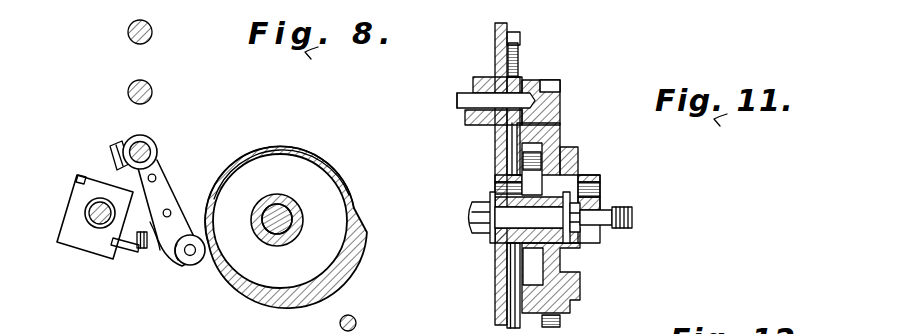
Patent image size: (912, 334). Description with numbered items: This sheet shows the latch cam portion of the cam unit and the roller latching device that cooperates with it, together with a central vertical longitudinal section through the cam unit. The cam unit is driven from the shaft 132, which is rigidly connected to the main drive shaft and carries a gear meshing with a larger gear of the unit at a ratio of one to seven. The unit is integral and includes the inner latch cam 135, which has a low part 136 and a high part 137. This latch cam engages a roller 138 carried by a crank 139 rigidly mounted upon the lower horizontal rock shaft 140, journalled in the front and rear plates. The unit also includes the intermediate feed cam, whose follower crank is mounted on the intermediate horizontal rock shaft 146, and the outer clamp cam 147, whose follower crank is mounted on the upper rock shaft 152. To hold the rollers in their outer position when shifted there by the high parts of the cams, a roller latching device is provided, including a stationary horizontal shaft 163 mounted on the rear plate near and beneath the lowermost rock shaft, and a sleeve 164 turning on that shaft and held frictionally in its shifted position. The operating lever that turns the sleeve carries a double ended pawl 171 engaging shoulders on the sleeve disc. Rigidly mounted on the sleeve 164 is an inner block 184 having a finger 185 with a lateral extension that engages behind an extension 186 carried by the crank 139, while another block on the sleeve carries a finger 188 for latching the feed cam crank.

In FIG. 11, the shaft 132 is at (472, 96).
In FIG. 8, the inner latch cam 135 is at (354, 213).
In FIG. 11, the inner latch cam 135 is at (527, 147).
In FIG. 8, the low part 136 is at (340, 171).
In FIG. 8, the high part 137 is at (342, 257).
In FIG. 8, the roller 138 is at (183, 263).
In FIG. 8, the crank 139 is at (177, 214).
In FIG. 8, the lower horizontal rock shaft 140 is at (142, 151).
In FIG. 8, the intermediate horizontal rock shaft 146 is at (128, 92).
In FIG. 11, the outer clamp cam 147 is at (581, 161).
In FIG. 8, the upper rock shaft 152 is at (129, 35).
In FIG. 8, the horizontal shaft 163 is at (89, 214).
In FIG. 8, the sleeve 164 is at (89, 205).
In FIG. 11, the double ended pawl 171 is at (563, 332).
In FIG. 8, the inner block 184 is at (80, 240).
In FIG. 8, the finger 185 is at (118, 250).
In FIG. 8, the extension 186 is at (152, 244).
In FIG. 11, the finger 188 is at (549, 81).